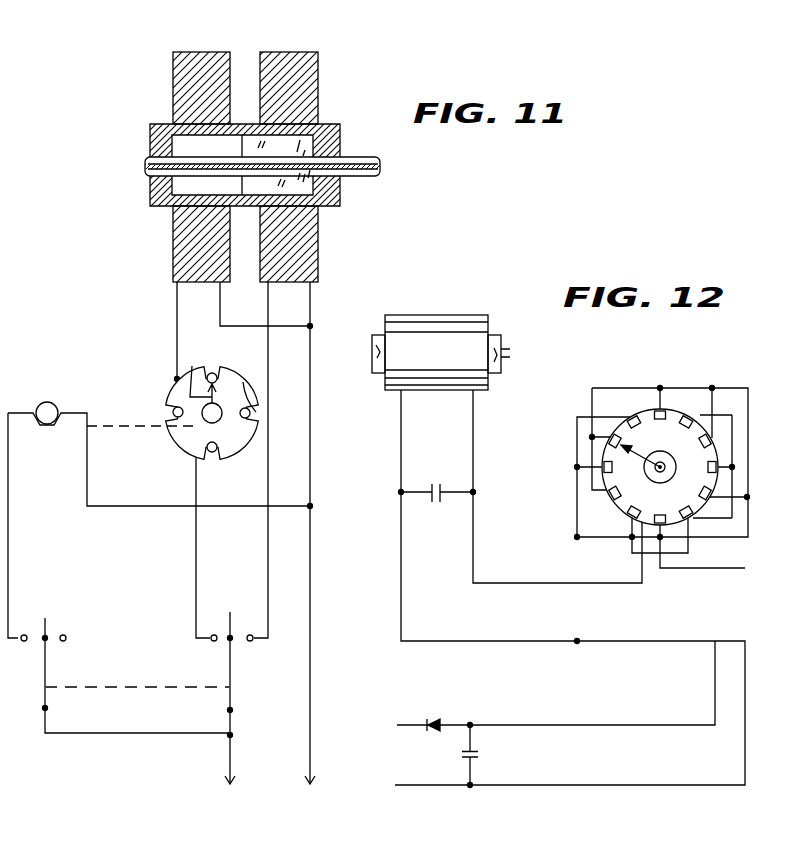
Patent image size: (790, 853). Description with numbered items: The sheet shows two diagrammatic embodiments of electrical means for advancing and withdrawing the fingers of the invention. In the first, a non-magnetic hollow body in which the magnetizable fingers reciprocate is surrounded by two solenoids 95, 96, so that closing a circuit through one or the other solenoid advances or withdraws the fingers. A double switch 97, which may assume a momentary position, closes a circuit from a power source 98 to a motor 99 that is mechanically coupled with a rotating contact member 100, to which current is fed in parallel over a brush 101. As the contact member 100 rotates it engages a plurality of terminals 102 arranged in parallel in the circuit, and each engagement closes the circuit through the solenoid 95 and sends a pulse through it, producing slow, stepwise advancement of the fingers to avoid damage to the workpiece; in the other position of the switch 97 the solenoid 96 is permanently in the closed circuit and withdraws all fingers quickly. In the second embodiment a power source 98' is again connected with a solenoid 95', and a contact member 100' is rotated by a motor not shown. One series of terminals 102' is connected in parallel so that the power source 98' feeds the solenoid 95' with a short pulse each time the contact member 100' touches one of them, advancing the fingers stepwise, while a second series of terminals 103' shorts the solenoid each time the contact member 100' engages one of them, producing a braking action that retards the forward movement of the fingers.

In FIG. 11, the solenoid 95 is at (201, 148).
In FIG. 11, the solenoid 96 is at (299, 52).
In FIG. 11, the motor 99 is at (40, 403).
In FIG. 11, the rotating contact member 100 is at (204, 359).
In FIG. 11, the brush 101 is at (200, 422).
In FIG. 11, the terminals 102 is at (217, 399).
In FIG. 11, the double switch 97 is at (228, 655).
In FIG. 11, the power source 98 is at (229, 774).
In FIG. 12, the solenoid 95' is at (441, 338).
In FIG. 12, the contact member 100' is at (660, 467).
In FIG. 12, the terminals 102' is at (668, 438).
In FIG. 12, the terminals 103' is at (588, 442).
In FIG. 12, the power source 98' is at (428, 735).